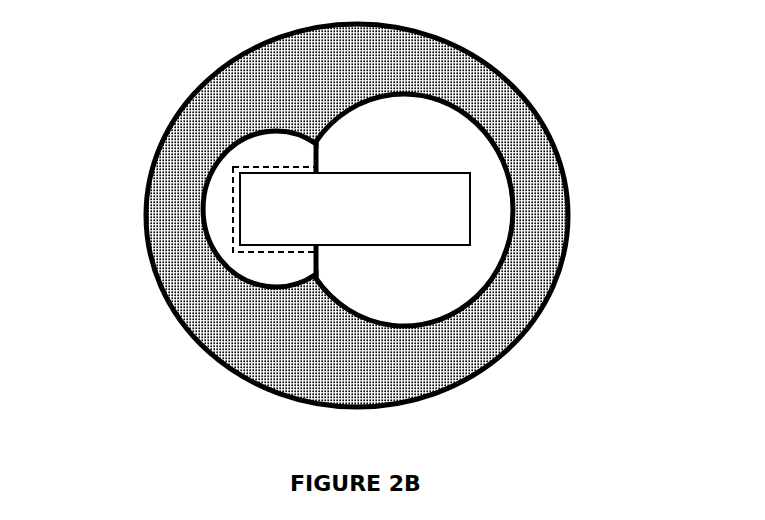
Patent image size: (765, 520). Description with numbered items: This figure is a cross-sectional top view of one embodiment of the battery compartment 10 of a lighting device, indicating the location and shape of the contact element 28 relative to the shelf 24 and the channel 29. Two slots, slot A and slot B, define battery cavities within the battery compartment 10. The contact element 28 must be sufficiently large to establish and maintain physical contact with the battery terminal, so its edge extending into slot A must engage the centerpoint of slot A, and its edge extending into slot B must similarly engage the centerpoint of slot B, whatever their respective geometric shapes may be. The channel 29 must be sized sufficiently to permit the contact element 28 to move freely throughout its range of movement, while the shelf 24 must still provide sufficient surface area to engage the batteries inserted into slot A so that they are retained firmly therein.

The battery compartment 10 is at (420, 368).
The shelf 24 is at (252, 153).
The contact element 28 is at (355, 209).
The channel 29 is at (232, 212).
The slot A is at (273, 268).
The slot B is at (433, 142).